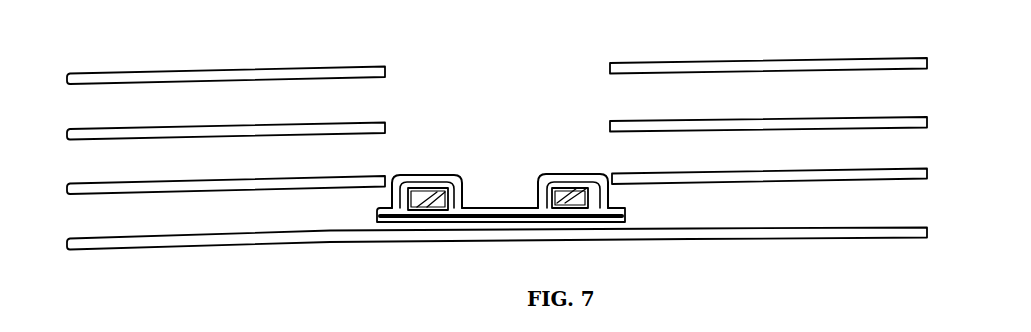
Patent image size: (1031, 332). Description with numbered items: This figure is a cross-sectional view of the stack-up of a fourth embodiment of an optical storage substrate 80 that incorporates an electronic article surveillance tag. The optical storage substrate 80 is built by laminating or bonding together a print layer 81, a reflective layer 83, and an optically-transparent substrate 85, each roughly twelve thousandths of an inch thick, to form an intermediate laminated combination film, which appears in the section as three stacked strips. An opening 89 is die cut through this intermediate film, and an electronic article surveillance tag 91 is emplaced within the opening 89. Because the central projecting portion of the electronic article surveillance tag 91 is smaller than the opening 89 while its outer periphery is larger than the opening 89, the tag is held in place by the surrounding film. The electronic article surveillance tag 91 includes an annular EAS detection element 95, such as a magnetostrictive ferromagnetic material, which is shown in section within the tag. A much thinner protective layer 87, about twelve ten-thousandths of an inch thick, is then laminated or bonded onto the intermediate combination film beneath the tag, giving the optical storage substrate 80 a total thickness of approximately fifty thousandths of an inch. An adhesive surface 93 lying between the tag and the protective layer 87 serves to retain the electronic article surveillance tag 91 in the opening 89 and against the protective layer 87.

The optical storage substrate 80 is at (680, 282).
The print layer 81 is at (930, 63).
The reflective layer 83 is at (928, 120).
The optically-transparent substrate 85 is at (928, 175).
The protective layer 87 is at (928, 235).
The opening 89 is at (603, 58).
The electronic article surveillance tag 91 is at (428, 180).
The adhesive surface 93 is at (485, 218).
The EAS detection element 95 is at (545, 197).